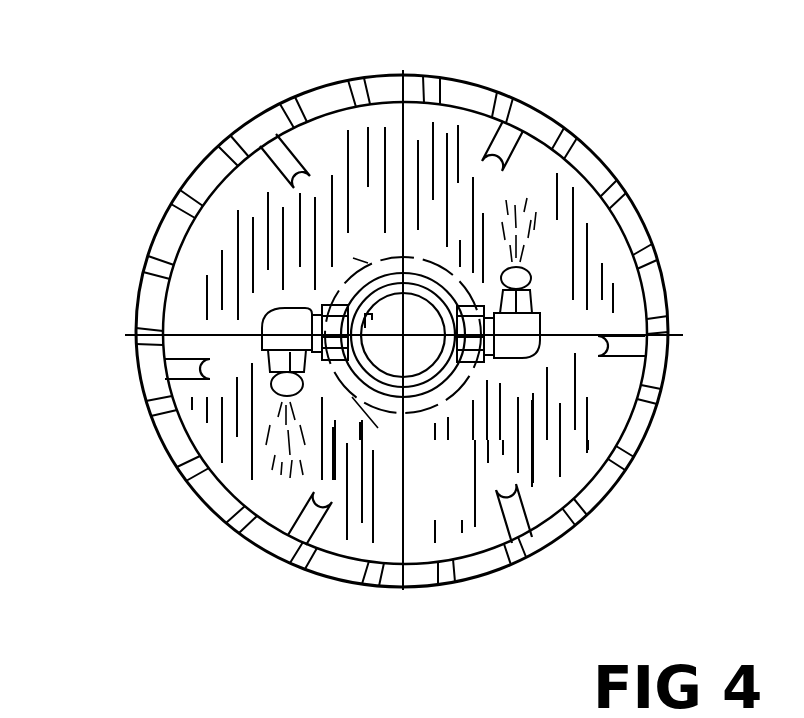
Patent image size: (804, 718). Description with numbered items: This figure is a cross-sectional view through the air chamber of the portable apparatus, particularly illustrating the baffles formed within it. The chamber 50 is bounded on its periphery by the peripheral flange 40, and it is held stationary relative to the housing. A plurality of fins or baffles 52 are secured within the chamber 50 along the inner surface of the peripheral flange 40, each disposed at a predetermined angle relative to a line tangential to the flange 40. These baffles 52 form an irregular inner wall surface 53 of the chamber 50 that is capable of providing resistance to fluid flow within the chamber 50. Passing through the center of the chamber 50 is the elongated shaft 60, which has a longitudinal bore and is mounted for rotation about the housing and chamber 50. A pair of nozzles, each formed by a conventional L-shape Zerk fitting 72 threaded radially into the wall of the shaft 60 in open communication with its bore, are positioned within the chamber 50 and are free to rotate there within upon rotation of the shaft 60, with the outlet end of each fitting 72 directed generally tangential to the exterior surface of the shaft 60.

The peripheral flange 40 is at (650, 276).
The chamber 50 is at (555, 420).
The fins or baffles 52 is at (287, 163).
The irregular inner wall surface 53 is at (615, 473).
The elongated shaft 60 is at (436, 242).
The L-shape Zerk fitting 72 is at (287, 320).